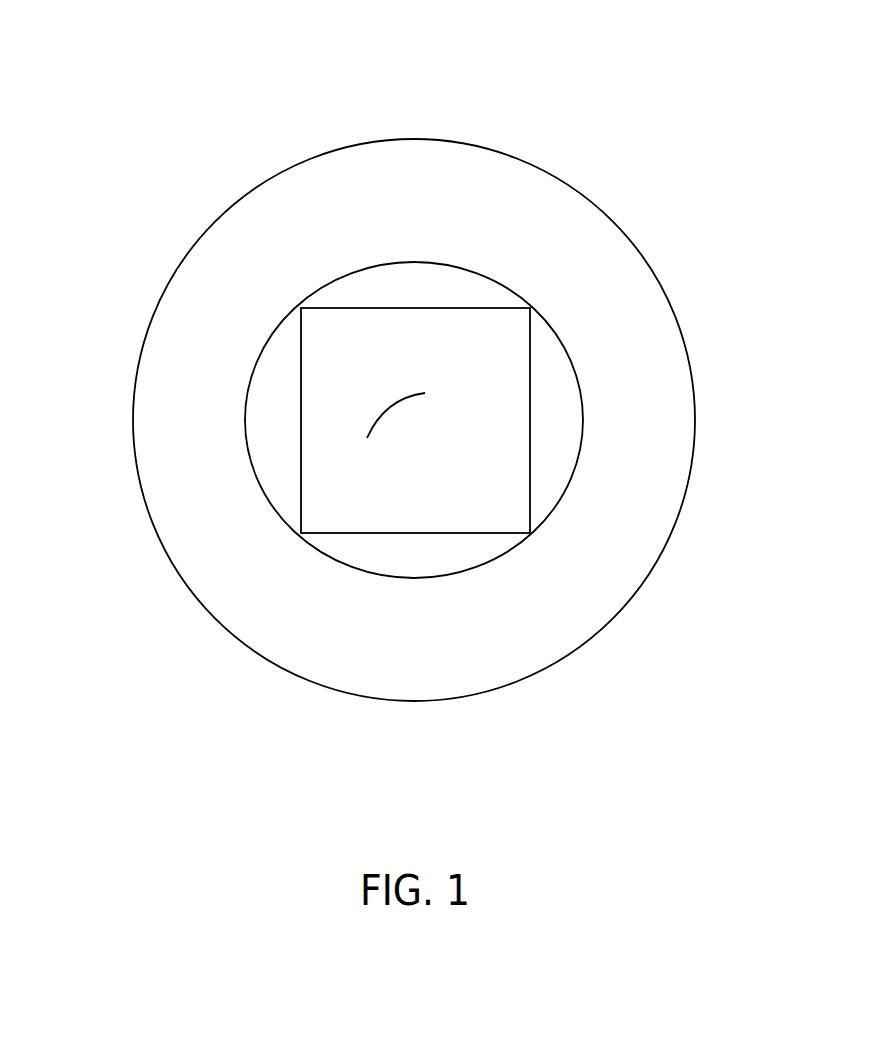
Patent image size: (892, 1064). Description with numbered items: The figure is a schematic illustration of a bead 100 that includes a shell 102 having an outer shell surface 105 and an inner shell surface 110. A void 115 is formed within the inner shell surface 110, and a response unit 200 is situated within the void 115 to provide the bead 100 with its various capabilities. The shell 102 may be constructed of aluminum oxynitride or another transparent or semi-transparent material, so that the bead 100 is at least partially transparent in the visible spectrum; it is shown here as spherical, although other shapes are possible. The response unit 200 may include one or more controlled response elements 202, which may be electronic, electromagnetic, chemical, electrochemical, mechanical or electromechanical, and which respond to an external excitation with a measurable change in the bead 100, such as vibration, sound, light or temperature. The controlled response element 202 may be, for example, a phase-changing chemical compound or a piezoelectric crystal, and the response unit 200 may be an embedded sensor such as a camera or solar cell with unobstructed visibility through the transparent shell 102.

The bead 100 is at (118, 249).
The shell 102 is at (362, 140).
The outer shell surface 105 is at (482, 147).
The inner shell surface 110 is at (473, 272).
The void 115 is at (395, 290).
The response unit 200 is at (530, 412).
The controlled response element 202 is at (382, 410).